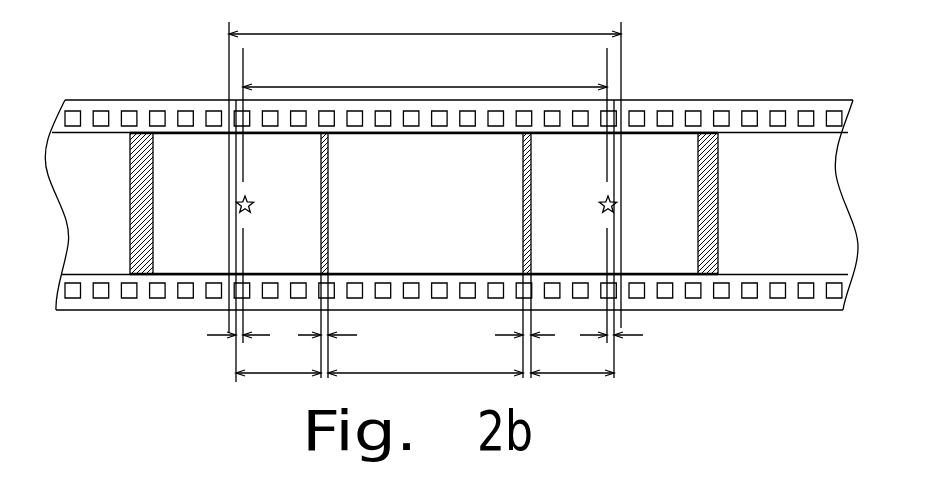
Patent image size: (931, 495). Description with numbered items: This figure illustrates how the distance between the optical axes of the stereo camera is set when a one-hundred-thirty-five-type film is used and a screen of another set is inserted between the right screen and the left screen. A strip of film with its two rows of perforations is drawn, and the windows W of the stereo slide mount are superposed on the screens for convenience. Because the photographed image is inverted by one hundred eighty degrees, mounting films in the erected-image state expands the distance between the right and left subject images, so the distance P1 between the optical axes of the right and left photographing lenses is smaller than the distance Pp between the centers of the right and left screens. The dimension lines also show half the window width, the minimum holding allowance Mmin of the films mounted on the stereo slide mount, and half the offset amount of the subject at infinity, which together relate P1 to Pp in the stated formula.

The window W is at (153, 160).
The distance between the centers of the right and left screens Pp is at (425, 25).
The distance between the optical axes of the right and left photographing lenses P1 is at (425, 79).
The minimum holding allowance Mmin is at (425, 337).